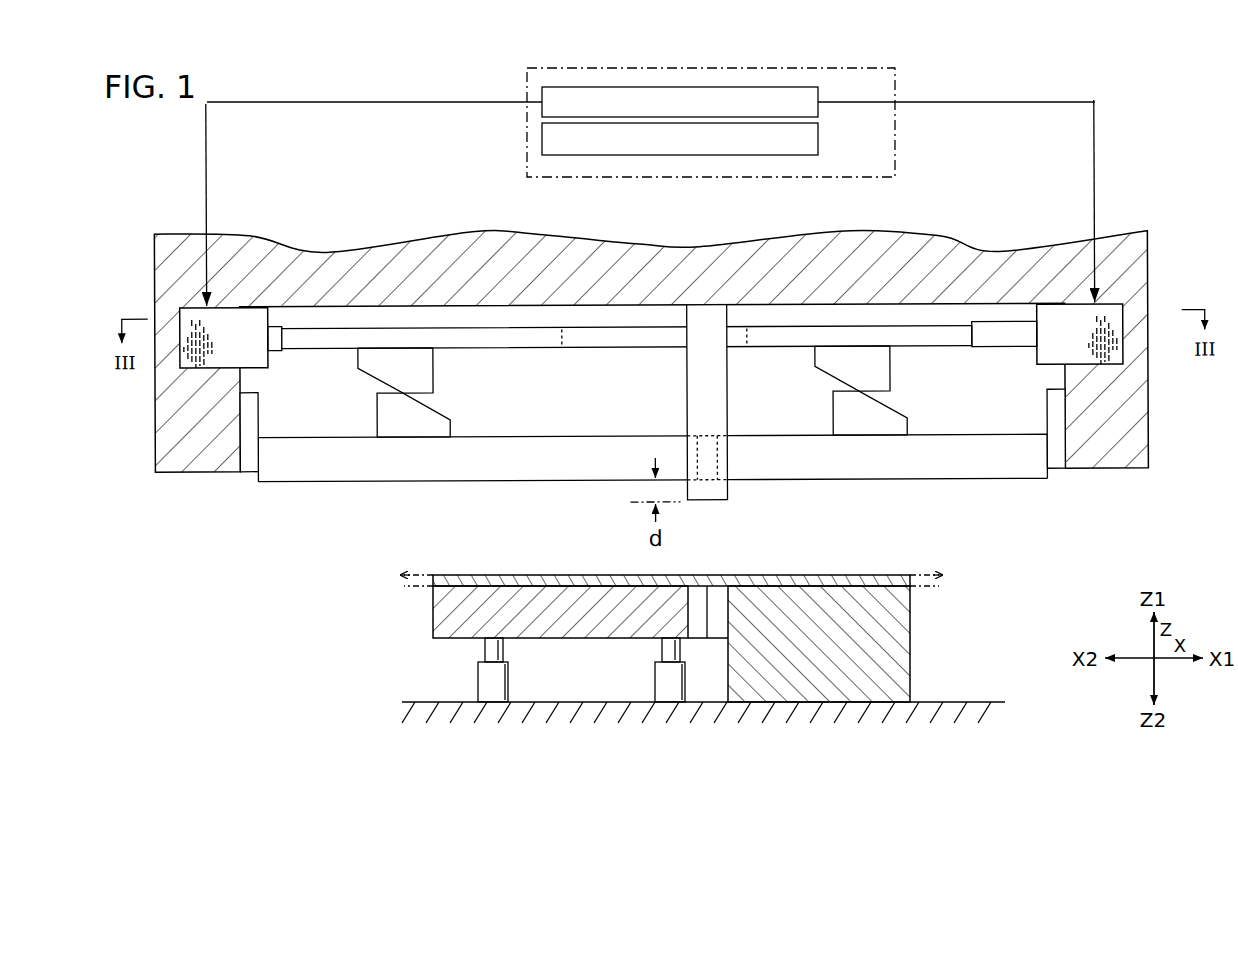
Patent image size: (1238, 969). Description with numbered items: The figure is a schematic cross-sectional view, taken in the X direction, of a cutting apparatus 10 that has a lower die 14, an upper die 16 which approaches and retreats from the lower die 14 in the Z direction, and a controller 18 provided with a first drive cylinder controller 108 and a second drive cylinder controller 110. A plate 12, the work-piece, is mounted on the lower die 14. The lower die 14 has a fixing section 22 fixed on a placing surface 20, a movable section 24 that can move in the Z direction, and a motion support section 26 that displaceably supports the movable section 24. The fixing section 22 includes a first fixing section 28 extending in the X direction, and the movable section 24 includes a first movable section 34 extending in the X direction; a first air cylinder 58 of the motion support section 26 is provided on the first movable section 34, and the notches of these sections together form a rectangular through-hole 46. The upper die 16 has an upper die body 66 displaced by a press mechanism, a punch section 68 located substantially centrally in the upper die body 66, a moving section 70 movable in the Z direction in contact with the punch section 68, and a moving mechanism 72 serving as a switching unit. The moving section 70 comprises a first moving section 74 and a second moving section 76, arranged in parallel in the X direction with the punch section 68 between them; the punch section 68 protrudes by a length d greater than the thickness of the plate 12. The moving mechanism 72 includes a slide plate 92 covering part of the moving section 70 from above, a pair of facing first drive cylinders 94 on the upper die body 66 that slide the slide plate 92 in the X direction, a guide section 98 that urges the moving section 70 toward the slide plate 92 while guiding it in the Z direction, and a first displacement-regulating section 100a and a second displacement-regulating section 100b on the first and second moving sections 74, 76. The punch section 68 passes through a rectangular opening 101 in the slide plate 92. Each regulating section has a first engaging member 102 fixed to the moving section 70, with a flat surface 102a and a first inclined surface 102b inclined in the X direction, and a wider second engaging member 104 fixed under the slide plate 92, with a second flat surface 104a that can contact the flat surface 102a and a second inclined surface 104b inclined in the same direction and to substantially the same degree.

The cutting apparatus 10 is at (1166, 148).
The plate 12 is at (880, 582).
The lower die 14 is at (990, 612).
The upper die 16 is at (1152, 224).
The controller 18 is at (895, 118).
The placing surface 20 is at (952, 700).
The fixing section 22 is at (835, 658).
The movable section 24 is at (431, 603).
The motion support section 26 is at (560, 716).
The first fixing section 28 is at (893, 632).
The first movable section 34 is at (455, 623).
The rectangular through-hole 46 is at (717, 598).
The first air cylinder 58 is at (505, 684).
The upper die body 66 is at (1130, 425).
The punch section 68 is at (705, 384).
The moving section 70 is at (990, 496).
The moving mechanism 72 is at (1124, 300).
The first moving section 74 is at (603, 452).
The second moving section 76 is at (1015, 448).
The slide plate 92 is at (948, 337).
The first drive cylinder 94 is at (190, 346).
The guide section 98 is at (250, 466).
The first displacement-regulating section 100a is at (363, 422).
The second displacement-regulating section 100b is at (820, 422).
The opening 101 is at (562, 348).
The first engaging member 102 is at (427, 428).
The flat surface 102a is at (407, 396).
The first inclined surface 102b is at (449, 417).
The second engaging member 104 is at (420, 373).
The second flat surface 104a is at (442, 395).
The second inclined surface 104b is at (362, 372).
The first drive cylinder controller 108 is at (820, 95).
The second drive cylinder controller 110 is at (820, 140).